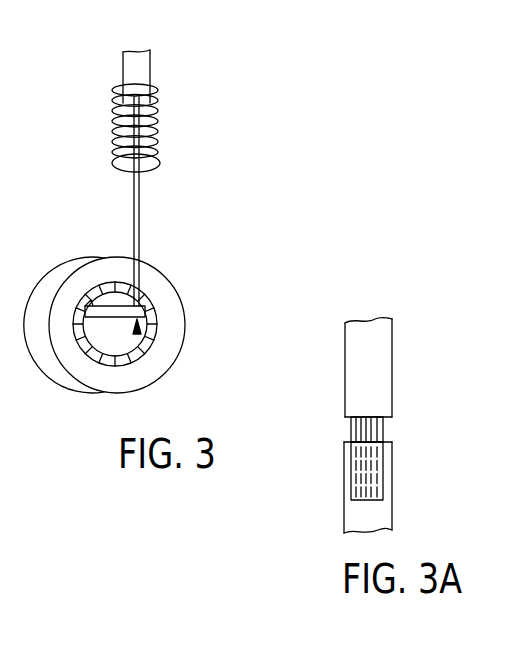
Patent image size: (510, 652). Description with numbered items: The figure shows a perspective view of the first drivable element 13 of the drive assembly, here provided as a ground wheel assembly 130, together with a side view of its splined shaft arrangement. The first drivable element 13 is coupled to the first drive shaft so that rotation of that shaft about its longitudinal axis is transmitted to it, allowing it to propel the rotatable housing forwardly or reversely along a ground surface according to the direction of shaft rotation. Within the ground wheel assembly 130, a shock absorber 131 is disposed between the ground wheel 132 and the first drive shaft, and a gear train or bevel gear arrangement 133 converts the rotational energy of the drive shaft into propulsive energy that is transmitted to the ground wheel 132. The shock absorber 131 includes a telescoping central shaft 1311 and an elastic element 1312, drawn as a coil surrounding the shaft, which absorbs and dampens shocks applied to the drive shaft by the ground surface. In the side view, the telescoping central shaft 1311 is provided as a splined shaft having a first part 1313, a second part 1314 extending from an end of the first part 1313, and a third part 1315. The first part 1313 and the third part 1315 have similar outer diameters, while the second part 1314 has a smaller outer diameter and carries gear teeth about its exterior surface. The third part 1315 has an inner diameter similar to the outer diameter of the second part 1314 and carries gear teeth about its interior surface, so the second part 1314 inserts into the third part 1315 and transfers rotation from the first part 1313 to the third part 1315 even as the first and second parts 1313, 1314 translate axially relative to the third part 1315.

In FIG. 3, the first drivable element 13 is at (165, 221).
In FIG. 3, the ground wheel assembly 130 is at (232, 238).
In FIG. 3, the shock absorber 131 is at (162, 122).
In FIG. 3, the telescoping central shaft 1311 is at (137, 135).
In FIG. 3, the elastic element 1312 is at (158, 164).
In FIG. 3, the first part 1313 is at (138, 193).
In FIG. 3A, the first part 1313 is at (383, 340).
In FIG. 3A, the second part 1314 is at (385, 424).
In FIG. 3, the third part 1315 is at (131, 77).
In FIG. 3A, the third part 1315 is at (378, 513).
In FIG. 3, the ground wheel 132 is at (173, 305).
In FIG. 3, the gear train or bevel gear arrangement 133 is at (140, 334).